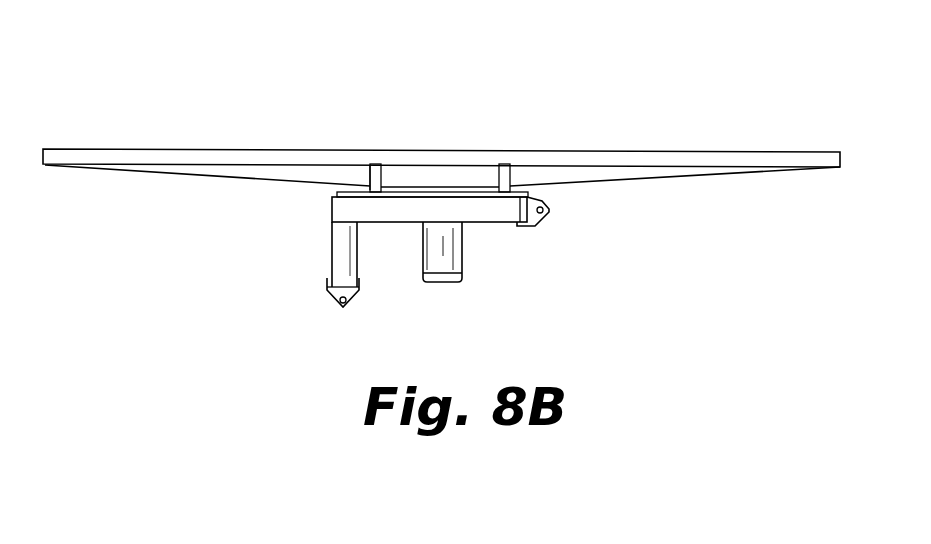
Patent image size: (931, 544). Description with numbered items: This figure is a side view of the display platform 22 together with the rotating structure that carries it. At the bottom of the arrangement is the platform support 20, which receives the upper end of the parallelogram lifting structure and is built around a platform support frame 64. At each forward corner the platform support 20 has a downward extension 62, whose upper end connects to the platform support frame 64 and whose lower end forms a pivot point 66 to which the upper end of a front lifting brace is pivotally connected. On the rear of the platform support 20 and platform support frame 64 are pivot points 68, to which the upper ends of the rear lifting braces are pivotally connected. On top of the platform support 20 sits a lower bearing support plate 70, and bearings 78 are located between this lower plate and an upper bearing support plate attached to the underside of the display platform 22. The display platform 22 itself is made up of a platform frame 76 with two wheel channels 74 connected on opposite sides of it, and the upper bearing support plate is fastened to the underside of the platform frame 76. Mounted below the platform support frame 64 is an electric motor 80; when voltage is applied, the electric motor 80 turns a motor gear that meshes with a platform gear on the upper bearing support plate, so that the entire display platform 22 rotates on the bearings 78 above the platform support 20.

The display platform 22 is at (635, 103).
The wheel channels 74 is at (677, 152).
The lower bearing support plate 70 is at (465, 190).
The platform frame 76 is at (368, 176).
The bearings 78 is at (438, 183).
The platform support 20 is at (500, 239).
The platform support frame 64 is at (400, 210).
The pivot points 68 is at (538, 222).
The downward extension 62 is at (337, 238).
The pivot point 66 is at (342, 306).
The electric motor 80 is at (465, 250).